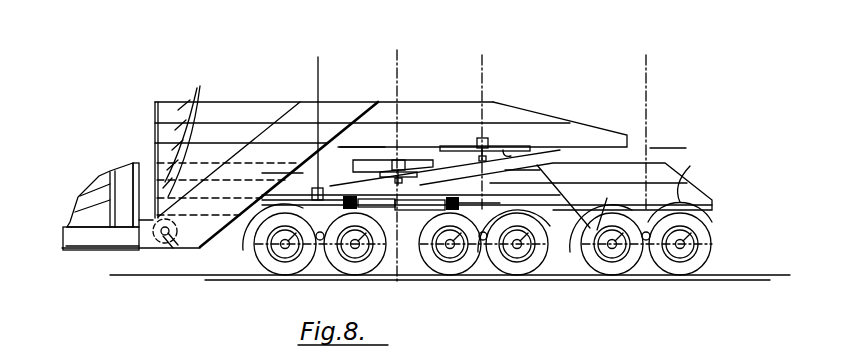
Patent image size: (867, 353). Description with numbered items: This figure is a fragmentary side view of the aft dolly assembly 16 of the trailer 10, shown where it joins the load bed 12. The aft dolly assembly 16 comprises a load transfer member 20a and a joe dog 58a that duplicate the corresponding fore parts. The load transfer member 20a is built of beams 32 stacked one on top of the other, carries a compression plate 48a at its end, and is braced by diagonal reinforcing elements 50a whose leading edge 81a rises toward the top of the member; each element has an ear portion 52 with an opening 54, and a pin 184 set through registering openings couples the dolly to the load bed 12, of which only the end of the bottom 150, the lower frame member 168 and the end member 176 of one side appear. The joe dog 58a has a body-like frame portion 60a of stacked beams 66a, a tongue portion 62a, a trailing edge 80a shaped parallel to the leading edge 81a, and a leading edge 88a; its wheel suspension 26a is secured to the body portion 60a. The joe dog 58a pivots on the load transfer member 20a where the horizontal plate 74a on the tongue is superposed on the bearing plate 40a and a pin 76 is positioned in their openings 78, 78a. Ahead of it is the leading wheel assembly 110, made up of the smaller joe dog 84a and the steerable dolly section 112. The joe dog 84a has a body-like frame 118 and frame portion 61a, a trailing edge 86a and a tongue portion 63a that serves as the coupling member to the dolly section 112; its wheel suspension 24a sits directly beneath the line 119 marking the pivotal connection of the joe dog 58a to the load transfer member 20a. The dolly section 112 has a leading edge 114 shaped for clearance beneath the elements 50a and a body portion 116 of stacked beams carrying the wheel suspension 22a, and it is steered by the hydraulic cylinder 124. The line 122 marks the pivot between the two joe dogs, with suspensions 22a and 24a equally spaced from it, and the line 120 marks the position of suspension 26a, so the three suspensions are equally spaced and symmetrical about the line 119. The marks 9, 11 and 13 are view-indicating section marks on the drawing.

The reinforcing elements 50a is at (280, 106).
The load transfer member 20a is at (237, 100).
The beams 32 is at (200, 100).
The section line 9 is at (110, 100).
The compression plate 48a is at (154, 143).
The end member 176 is at (128, 166).
The load bed 12 is at (86, 197).
The bottom frame member 168 is at (73, 252).
The bottom 150 is at (93, 253).
The section line 13 is at (396, 83).
The pin 184 is at (169, 249).
The ear portion 52 is at (174, 246).
The opening 54 is at (170, 240).
The leading edge 81a is at (214, 256).
The steerable dolly section 112 is at (277, 264).
The leading edge 114 is at (244, 228).
The wheel suspension 22a is at (331, 215).
The body portion 116 is at (340, 212).
The hydraulic cylinder 124 is at (405, 213).
The body-like frame 118 is at (350, 207).
The wheel suspension 24a is at (483, 262).
The trailing edge 86a is at (548, 268).
The leading edge 88a is at (583, 212).
The body-like frame portion 61a is at (500, 226).
The body-like frame portion 60a is at (575, 220).
The wheel suspension 26a is at (645, 262).
The joe dog 58a is at (708, 213).
The trailing edge 80a is at (703, 193).
The beams 66a is at (686, 172).
The trailer 10 is at (357, 147).
The section line 11 is at (275, 173).
The aft dolly assembly 16 is at (550, 110).
The horizontal bearing plate 40a is at (505, 147).
The pin 76 is at (315, 188).
The opening 78 is at (413, 172).
The horizontal plate 74a is at (511, 152).
The leading wheel assembly 110 is at (540, 170).
The tongue portion 62a is at (573, 162).
The joe dog 84a is at (431, 184).
The line 122 is at (397, 62).
The line 119 is at (482, 58).
The tongue portion 63a is at (345, 162).
The opening 78a is at (311, 192).
The line 120 is at (318, 57).